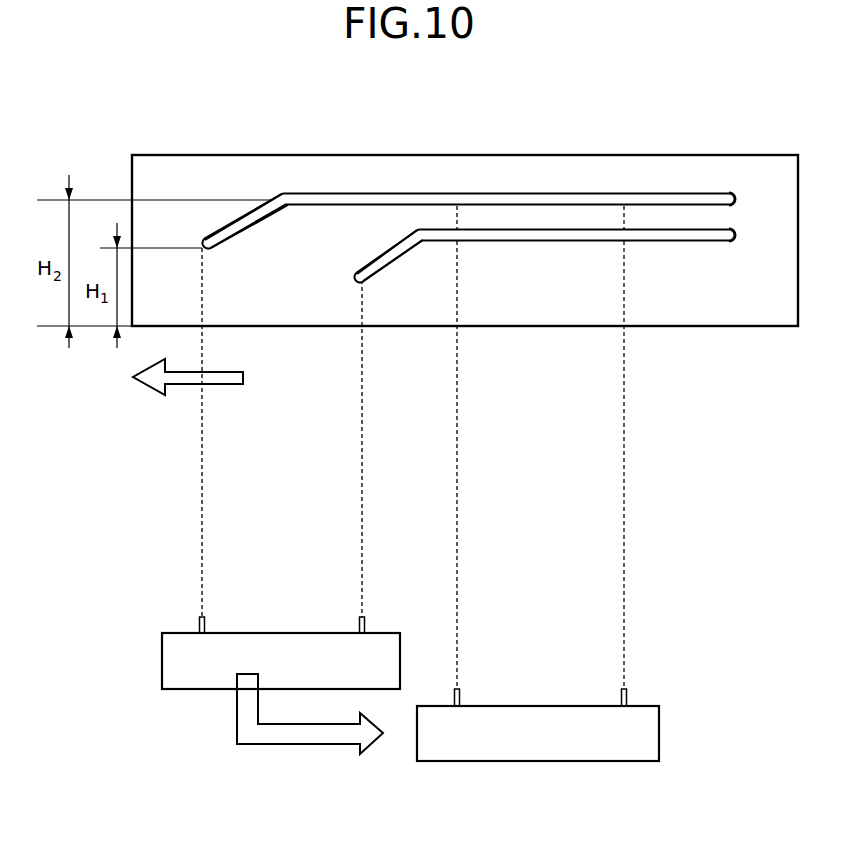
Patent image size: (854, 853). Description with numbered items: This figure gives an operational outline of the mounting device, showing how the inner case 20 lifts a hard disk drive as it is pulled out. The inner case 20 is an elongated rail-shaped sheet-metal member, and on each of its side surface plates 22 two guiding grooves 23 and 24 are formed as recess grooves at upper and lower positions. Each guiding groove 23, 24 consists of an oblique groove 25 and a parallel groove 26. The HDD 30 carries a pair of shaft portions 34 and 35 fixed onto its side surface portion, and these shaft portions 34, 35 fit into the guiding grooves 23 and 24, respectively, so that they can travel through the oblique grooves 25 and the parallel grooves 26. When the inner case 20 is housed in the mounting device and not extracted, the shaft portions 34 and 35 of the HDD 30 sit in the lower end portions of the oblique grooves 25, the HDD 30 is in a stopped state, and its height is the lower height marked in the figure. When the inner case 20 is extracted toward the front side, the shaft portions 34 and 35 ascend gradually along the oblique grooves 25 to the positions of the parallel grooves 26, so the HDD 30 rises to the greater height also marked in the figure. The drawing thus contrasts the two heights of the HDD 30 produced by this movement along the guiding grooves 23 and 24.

The inner case 20 is at (465, 201).
The side surface plate 22 is at (362, 170).
The guiding groove 23 is at (317, 190).
The guiding groove 24 is at (562, 248).
The oblique groove 25 is at (246, 221).
The parallel groove 26 is at (711, 205).
The HDD 30 is at (258, 632).
The shaft portion 34 is at (362, 616).
The shaft portion 35 is at (200, 616).